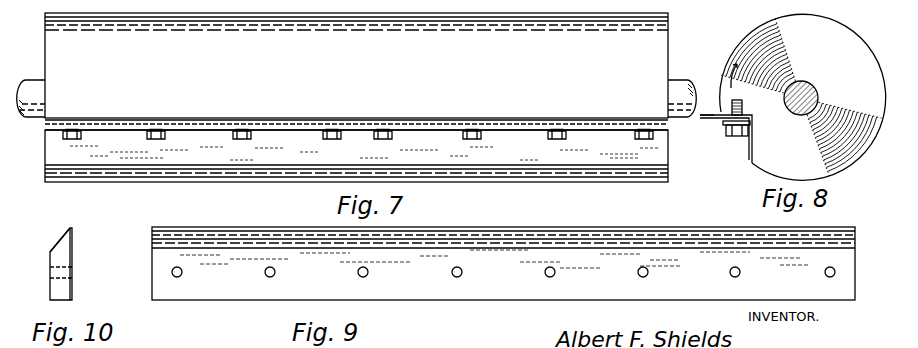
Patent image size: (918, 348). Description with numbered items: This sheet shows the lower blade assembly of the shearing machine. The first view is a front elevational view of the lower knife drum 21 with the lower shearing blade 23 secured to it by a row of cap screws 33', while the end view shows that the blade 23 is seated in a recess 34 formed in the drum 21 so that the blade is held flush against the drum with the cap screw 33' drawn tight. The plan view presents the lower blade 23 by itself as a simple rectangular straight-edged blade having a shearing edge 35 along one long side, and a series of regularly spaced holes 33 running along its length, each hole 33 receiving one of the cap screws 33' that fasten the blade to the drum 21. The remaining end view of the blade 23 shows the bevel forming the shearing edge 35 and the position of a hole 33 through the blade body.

In FIG. 7, the lower knife drum 21 is at (556, 22).
In FIG. 8, the lower knife drum 21 is at (850, 42).
In FIG. 7, the lower shearing blade 23 is at (406, 132).
In FIG. 8, the lower shearing blade 23 is at (717, 128).
In FIG. 9, the lower shearing blade 23 is at (442, 298).
In FIG. 10, the lower shearing blade 23 is at (72, 242).
In FIG. 9, the holes 33 is at (503, 278).
In FIG. 10, the holes 33 is at (76, 266).
In FIG. 7, the cap screws 33' is at (358, 144).
In FIG. 8, the cap screws 33' is at (719, 157).
In FIG. 8, the recess 34 is at (752, 142).
In FIG. 8, the shearing edge 35 is at (714, 124).
In FIG. 9, the shearing edge 35 is at (597, 226).
In FIG. 10, the shearing edge 35 is at (71, 229).